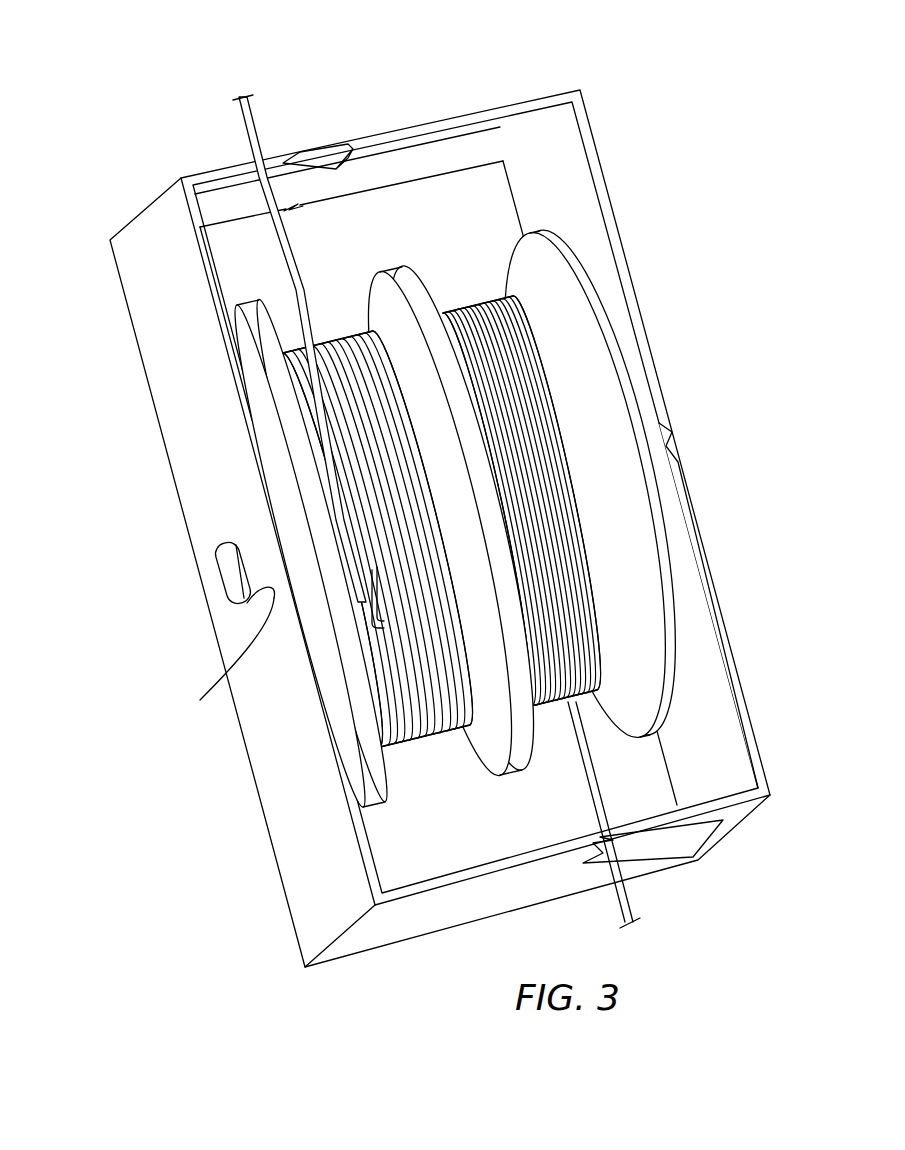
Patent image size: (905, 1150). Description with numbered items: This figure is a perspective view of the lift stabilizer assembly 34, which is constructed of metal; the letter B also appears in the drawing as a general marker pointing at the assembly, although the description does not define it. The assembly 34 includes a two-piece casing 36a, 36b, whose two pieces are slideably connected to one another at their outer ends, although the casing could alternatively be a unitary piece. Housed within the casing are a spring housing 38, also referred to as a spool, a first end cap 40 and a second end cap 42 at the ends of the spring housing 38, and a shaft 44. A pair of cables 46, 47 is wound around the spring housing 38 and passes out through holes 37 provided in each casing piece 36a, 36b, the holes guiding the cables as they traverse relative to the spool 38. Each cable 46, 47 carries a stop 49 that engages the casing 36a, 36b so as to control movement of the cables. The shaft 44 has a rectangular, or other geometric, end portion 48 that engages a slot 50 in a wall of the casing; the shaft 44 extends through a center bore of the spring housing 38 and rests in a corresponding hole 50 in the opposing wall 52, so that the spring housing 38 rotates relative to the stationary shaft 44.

The stabilizer assembly 34 is at (462, 486).
The bobbin assembly B is at (617, 127).
The casing piece 36a is at (242, 572).
The casing piece 36b is at (717, 717).
The holes 37 is at (272, 172).
The spring housing 38 is at (470, 457).
The first end cap 40 is at (282, 407).
The second end cap 42 is at (558, 260).
The shaft 44 is at (230, 578).
The cable 46 is at (245, 125).
The cable 47 is at (634, 905).
The end portion 48 is at (245, 607).
The stop 49 is at (243, 96).
The slot 50 is at (255, 628).
The opposing wall 52 is at (673, 517).